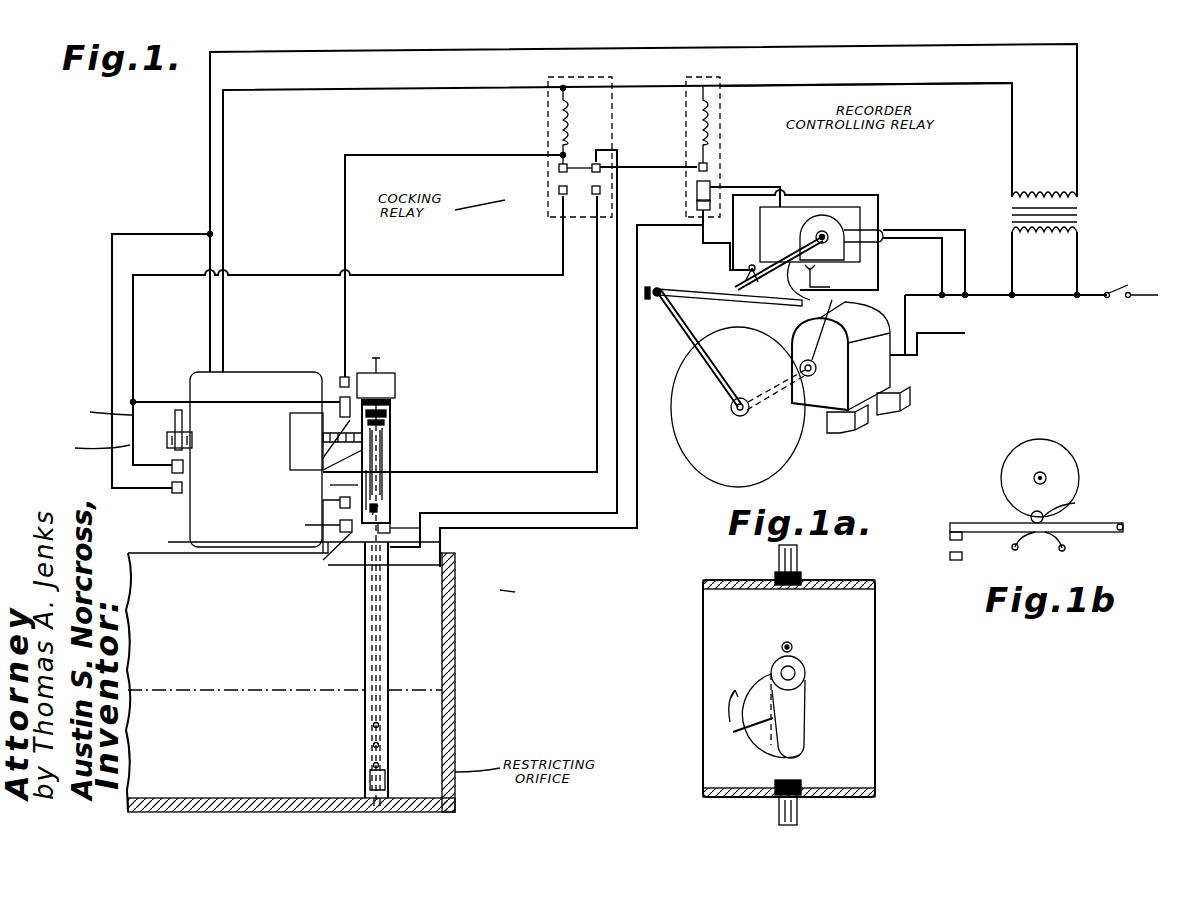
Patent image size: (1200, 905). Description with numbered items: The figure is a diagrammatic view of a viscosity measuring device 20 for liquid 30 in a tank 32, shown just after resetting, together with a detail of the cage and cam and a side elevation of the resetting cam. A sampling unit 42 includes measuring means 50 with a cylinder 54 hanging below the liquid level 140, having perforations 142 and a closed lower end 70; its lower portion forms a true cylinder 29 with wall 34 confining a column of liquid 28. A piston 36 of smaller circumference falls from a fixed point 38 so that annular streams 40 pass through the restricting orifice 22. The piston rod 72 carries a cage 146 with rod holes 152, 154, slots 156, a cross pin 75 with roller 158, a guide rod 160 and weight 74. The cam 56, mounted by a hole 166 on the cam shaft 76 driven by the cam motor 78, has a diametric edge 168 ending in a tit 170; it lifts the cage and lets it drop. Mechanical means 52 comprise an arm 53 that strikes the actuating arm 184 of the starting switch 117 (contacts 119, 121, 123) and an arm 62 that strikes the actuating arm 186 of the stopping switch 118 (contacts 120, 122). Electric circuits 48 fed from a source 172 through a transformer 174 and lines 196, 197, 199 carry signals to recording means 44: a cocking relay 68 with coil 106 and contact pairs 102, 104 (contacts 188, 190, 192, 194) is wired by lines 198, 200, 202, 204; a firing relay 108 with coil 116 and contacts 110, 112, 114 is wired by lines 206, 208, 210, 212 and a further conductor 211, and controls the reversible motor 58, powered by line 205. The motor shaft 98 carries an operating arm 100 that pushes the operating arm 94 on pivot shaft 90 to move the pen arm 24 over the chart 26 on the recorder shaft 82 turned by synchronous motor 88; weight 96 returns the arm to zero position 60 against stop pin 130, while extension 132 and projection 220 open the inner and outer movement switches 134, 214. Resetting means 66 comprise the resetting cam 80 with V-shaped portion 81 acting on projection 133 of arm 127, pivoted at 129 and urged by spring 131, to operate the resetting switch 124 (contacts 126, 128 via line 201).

In FIG. 1, the viscosity measuring device 20 is at (865, 440).
In FIG. 1, the restricting orifice 22 is at (386, 782).
In FIG. 1, the pen arm 24 is at (708, 356).
In FIG. 1, the chart 26 is at (712, 468).
In FIG. 1, the vertical column of liquid 28 is at (388, 770).
In FIG. 1, the true cylinder 29 is at (372, 788).
In FIG. 1, the liquid 30 is at (455, 748).
In FIG. 1, the tank 32 is at (455, 712).
In FIG. 1, the cylinder wall 34 is at (386, 788).
In FIG. 1, the piston 36 is at (386, 776).
In FIG. 1, the fixed point 38 is at (372, 765).
In FIG. 1, the annular streams of liquid 40 is at (372, 777).
In FIG. 1, the sampling unit 42 is at (474, 560).
In FIG. 1, the recording means 44 is at (886, 203).
In FIG. 1, the electric circuits 48 is at (590, 457).
In FIG. 1, the measuring means 50 is at (390, 648).
In FIG. 1, the mechanical means 52 is at (354, 490).
In FIG. 1, the starting arm 53 is at (328, 487).
In FIG. 1, the cylinder 54 is at (372, 607).
In FIG. 1, the cam 56 is at (384, 460).
In FIG. 1A, the cam 56 is at (760, 683).
In FIG. 1, the reversible electric motor 58 is at (818, 230).
In FIG. 1, the zero position 60 is at (742, 398).
In FIG. 1, the stopping arm 62 is at (377, 508).
In FIG. 1, the resetting means 66 is at (170, 456).
In FIG. 1, the cocking relay 68 is at (557, 190).
In FIG. 1, the closed lower end 70 is at (378, 806).
In FIG. 1, the piston rod 72 is at (395, 528).
In FIG. 1A, the piston rod 72 is at (797, 810).
In FIG. 1, the weight 74 is at (385, 378).
In FIG. 1A, the cross pin 75 is at (782, 643).
In FIG. 1, the cam shaft 76 is at (386, 414).
In FIG. 1A, the cam shaft 76 is at (805, 670).
In FIG. 1, the cam motor 78 is at (232, 382).
In FIG. 1, the resetting cam 80 is at (182, 414).
In FIG. 1B, the resetting cam 80 is at (1068, 456).
In FIG. 1B, the V-shaped portion 81 is at (1080, 503).
In FIG. 1, the recorder shaft 82 is at (800, 340).
In FIG. 1, the synchronous motor 88 is at (885, 366).
In FIG. 1, the pivot shaft 90 is at (657, 287).
In FIG. 1, the operating arm 94 is at (700, 303).
In FIG. 1, the weight 96 is at (652, 300).
In FIG. 1, the motor shaft 98 is at (830, 240).
In FIG. 1, the operating arm 100 is at (785, 290).
In FIG. 1, the first contact pair 102 is at (559, 190).
In FIG. 1, the second contact pair 104 is at (600, 172).
In FIG. 1, the cocking relay coil 106 is at (558, 118).
In FIG. 1, the firing relay 108 is at (722, 118).
In FIG. 1, the upper fixed contact 110 is at (707, 168).
In FIG. 1, the lower fixed contact 112 is at (710, 212).
In FIG. 1, the movable contact 114 is at (710, 186).
In FIG. 1, the firing relay coil 116 is at (710, 108).
In FIG. 1, the starting switch 117 is at (318, 430).
In FIG. 1, the stopping switch 118 is at (305, 525).
In FIG. 1, the upper fixed contact 119 is at (340, 380).
In FIG. 1, the movable contact 120 is at (340, 528).
In FIG. 1, the lower fixed contact 121 is at (318, 435).
In FIG. 1, the fixed contact 122 is at (340, 500).
In FIG. 1, the movable contact 123 is at (340, 400).
In FIG. 1, the resetting switch 124 is at (183, 476).
In FIG. 1, the fixed contact 126 is at (176, 493).
In FIG. 1B, the fixed contact 126 is at (950, 556).
In FIG. 1B, the arm 127 is at (962, 523).
In FIG. 1, the movable contact 128 is at (183, 465).
In FIG. 1B, the movable contact 128 is at (950, 537).
In FIG. 1B, the pivot 129 is at (1125, 523).
In FIG. 1, the stop pin 130 is at (697, 296).
In FIG. 1B, the spring 131 is at (1052, 548).
In FIG. 1, the extension 132 is at (760, 297).
In FIG. 1B, the projection 133 is at (1030, 515).
In FIG. 1, the inner movement switch 134 is at (752, 262).
In FIG. 1, the liquid level 140 is at (270, 690).
In FIG. 1, the perforations 142 is at (372, 765).
In FIG. 1, the cage 146 is at (405, 462).
In FIG. 1A, the cage 146 is at (875, 622).
In FIG. 1A, the upper rod hole 152 is at (775, 575).
In FIG. 1A, the lower rod hole 154 is at (801, 785).
In FIG. 1A, the vertical slots 156 is at (805, 710).
In FIG. 1, the roller 158 is at (384, 422).
In FIG. 1A, the roller 158 is at (792, 645).
In FIG. 1A, the guide rod 160 is at (797, 558).
In FIG. 1A, the hole 166 is at (795, 678).
In FIG. 1A, the diametric edge 168 is at (765, 720).
In FIG. 1, the tit 170 is at (375, 510).
In FIG. 1A, the tit 170 is at (773, 745).
In FIG. 1, the source of supply 172 is at (1138, 292).
In FIG. 1, the transformer 174 is at (1080, 215).
In FIG. 1, the actuating arm 184 is at (390, 402).
In FIG. 1, the actuating arm 186 is at (345, 538).
In FIG. 1, the fixed contact 188 is at (563, 196).
In FIG. 1, the movable contact 190 is at (559, 168).
In FIG. 1, the fixed contact 192 is at (600, 190).
In FIG. 1, the movable contact 194 is at (600, 164).
In FIG. 1, the line 196 is at (888, 78).
In FIG. 1, the line 197 is at (445, 89).
In FIG. 1, the line 198 is at (445, 155).
In FIG. 1, the motor line 199 is at (505, 43).
In FIG. 1, the line 200 is at (150, 346).
In FIG. 1, the line 201 is at (112, 340).
In FIG. 1, the line 202 is at (250, 402).
In FIG. 1, the line 204 is at (522, 472).
In FIG. 1, the line 205 is at (965, 230).
In FIG. 1, the line 206 is at (775, 190).
In FIG. 1, the reverse rotation line 208 is at (703, 240).
In FIG. 1, the line 210 is at (637, 500).
In FIG. 1, the conductor 211 is at (650, 150).
In FIG. 1, the line 212 is at (617, 410).
In FIG. 1, the outer movement switch 214 is at (831, 283).
In FIG. 1, the projection 220 is at (812, 300).